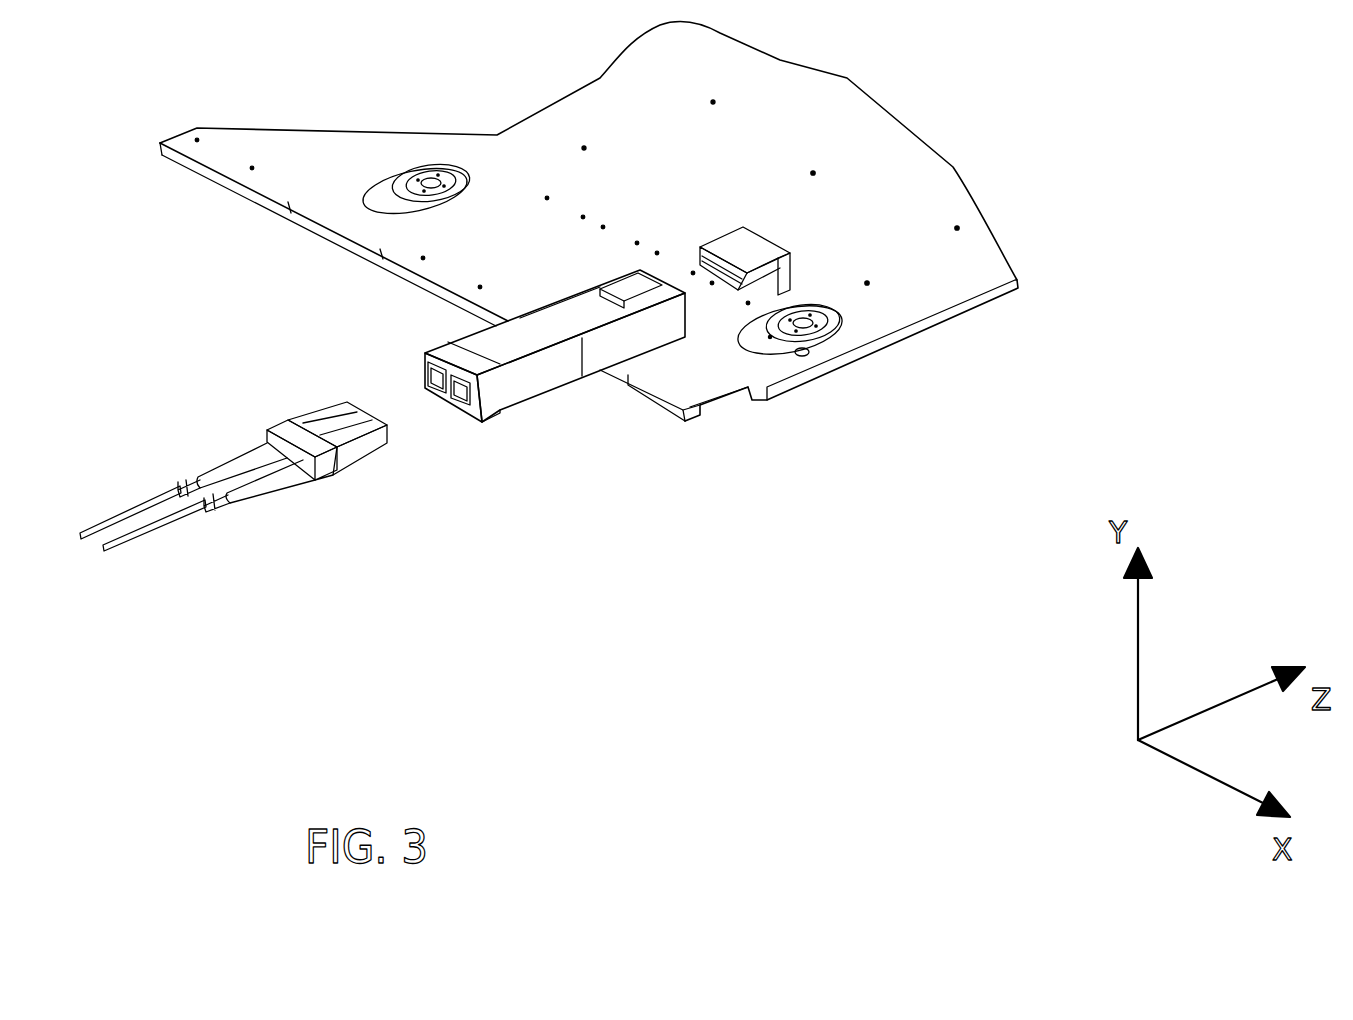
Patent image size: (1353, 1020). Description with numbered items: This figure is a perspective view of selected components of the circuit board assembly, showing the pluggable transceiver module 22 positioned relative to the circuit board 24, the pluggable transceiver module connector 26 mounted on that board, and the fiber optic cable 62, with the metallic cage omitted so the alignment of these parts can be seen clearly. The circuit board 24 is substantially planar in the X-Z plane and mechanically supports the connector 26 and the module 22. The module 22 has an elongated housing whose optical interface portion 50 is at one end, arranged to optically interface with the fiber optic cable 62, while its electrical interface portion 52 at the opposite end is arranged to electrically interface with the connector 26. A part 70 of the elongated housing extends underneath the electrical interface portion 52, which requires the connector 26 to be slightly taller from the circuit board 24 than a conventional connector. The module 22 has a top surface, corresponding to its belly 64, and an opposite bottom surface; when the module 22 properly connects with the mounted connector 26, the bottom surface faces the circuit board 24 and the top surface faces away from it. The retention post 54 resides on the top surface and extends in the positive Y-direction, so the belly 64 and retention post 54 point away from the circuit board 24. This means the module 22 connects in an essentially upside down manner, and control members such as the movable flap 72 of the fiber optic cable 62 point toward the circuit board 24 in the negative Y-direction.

The pluggable transceiver module 22 is at (589, 221).
The circuit board 24 is at (688, 98).
The pluggable transceiver module connector 26 is at (743, 227).
The optical interface portion 50 is at (529, 335).
The electrical interface portion 52 is at (644, 261).
The retention post 54 is at (470, 319).
The fiber optic cable 62 is at (247, 438).
The belly 64 is at (575, 318).
The part of the elongated housing 70 is at (598, 335).
The movable flap 72 is at (359, 460).